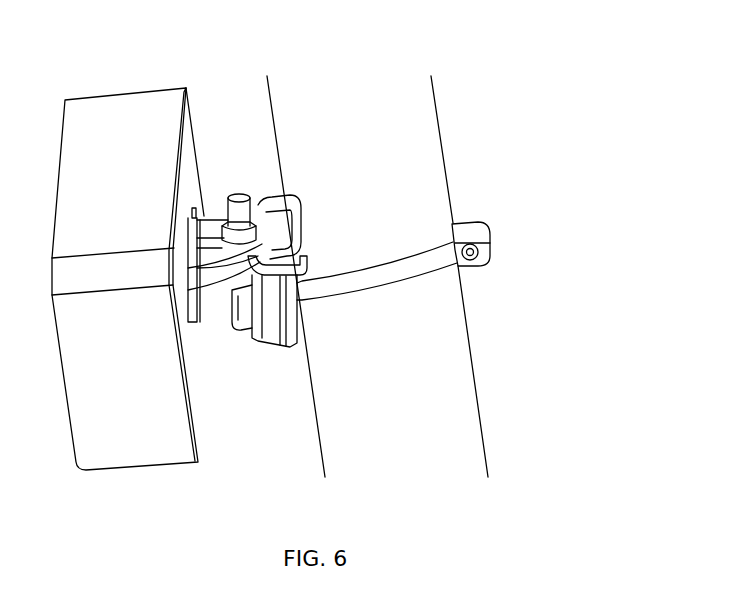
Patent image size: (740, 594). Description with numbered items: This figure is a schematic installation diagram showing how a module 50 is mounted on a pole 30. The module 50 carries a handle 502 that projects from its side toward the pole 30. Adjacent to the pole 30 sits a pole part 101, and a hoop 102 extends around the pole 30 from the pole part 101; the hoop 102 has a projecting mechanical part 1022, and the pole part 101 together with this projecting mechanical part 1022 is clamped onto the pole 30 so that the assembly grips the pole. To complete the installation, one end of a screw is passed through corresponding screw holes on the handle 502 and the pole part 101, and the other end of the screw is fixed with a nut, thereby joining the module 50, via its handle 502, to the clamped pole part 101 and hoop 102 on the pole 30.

The pole 30 is at (444, 158).
The module 50 is at (96, 98).
The handle 502 is at (216, 285).
The projecting mechanical part 1022 is at (272, 276).
The pole part 101 is at (246, 308).
The hoop 102 is at (430, 272).